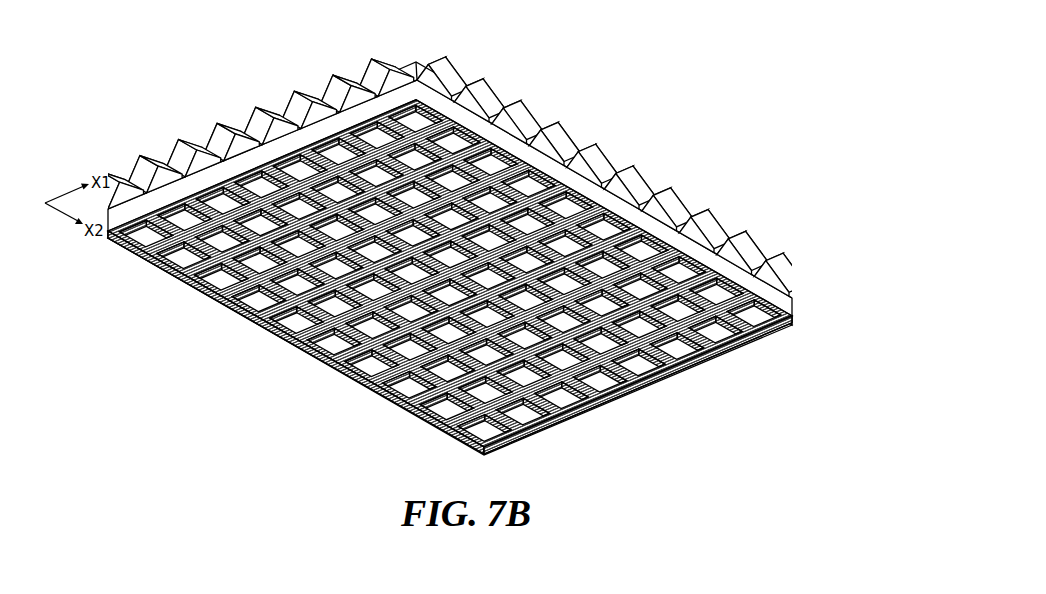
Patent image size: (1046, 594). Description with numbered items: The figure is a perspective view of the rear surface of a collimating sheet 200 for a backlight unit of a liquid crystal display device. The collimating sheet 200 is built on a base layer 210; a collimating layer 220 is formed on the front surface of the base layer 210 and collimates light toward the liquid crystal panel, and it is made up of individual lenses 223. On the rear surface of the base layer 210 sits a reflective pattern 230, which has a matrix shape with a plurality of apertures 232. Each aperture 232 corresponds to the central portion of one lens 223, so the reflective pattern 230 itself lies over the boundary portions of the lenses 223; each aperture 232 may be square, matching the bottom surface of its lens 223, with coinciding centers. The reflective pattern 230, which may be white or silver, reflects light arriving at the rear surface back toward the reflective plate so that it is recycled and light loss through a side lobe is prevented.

The collimating sheet 200 is at (662, 86).
The base layer 210 is at (800, 318).
The collimating layer 220 is at (448, 191).
The lens 223 is at (694, 208).
The reflective pattern 230 is at (657, 392).
The aperture 232 is at (714, 352).